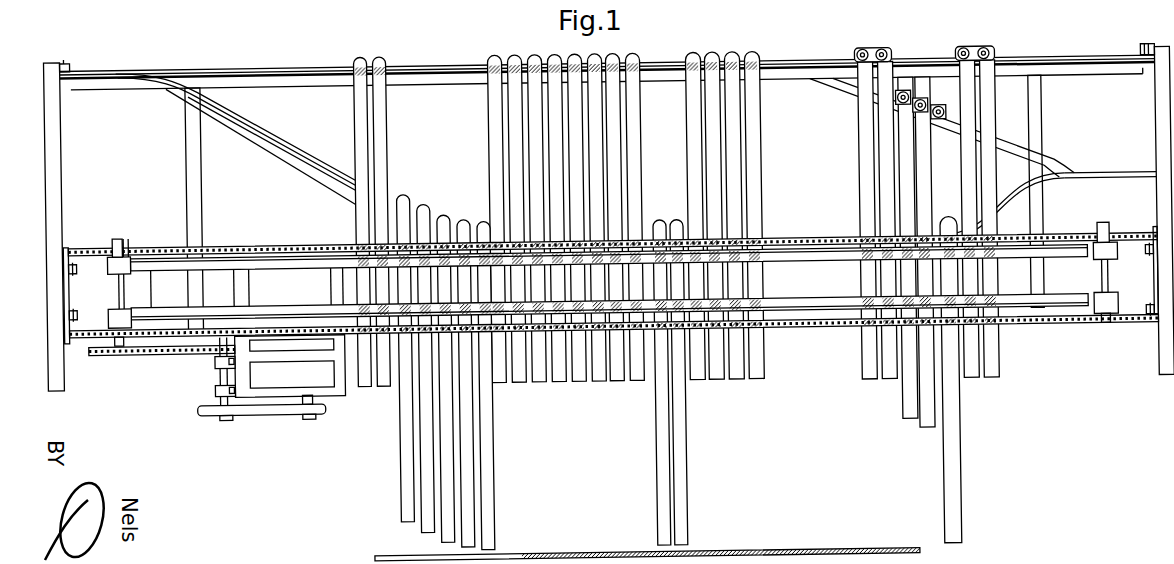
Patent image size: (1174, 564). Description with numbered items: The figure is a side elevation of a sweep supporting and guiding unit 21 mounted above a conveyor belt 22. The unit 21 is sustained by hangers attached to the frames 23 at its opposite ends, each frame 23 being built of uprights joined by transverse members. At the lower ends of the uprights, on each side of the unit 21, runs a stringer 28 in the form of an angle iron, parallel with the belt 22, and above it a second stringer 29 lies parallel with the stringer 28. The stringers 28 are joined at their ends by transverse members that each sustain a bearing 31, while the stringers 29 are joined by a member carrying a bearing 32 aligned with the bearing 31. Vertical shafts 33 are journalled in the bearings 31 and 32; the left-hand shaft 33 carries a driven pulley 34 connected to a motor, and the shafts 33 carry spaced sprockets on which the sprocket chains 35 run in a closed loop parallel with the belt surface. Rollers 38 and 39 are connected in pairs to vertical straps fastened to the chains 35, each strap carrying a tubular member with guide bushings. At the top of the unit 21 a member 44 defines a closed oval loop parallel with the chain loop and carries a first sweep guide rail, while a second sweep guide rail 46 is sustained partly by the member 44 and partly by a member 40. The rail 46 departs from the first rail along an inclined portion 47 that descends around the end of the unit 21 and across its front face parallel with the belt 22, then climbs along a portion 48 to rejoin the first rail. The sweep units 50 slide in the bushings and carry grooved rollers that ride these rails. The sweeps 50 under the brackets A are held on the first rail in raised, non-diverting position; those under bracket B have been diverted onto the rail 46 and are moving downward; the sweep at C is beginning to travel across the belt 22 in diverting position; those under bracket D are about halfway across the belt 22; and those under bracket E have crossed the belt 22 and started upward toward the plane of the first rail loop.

The sweep supporting and guiding unit 21 is at (277, 64).
The conveyor belt 22 is at (740, 557).
The frame 23 is at (187, 146).
The stringer 28 is at (847, 308).
The stringer 29 is at (798, 273).
The bearing 31 is at (109, 318).
The bearing 32 is at (107, 272).
The vertical shaft 33 is at (116, 241).
The driven pulley 34 is at (97, 357).
The sprocket chain 35 is at (88, 248).
The roller 38 is at (58, 263).
The roller 39 is at (60, 311).
The member 40 is at (300, 178).
The member 44 is at (1112, 91).
The second sweep guide rail 46 is at (1057, 174).
The inclined portion 47 is at (1007, 163).
The portion 48 is at (286, 142).
The sweep unit 50 is at (489, 153).
The bracket A sweeps A is at (53, 64).
The bracket B sweeps B is at (898, 95).
The sweep unit C is at (957, 464).
The bracket D sweeps D is at (683, 223).
The bracket E sweeps E is at (488, 226).